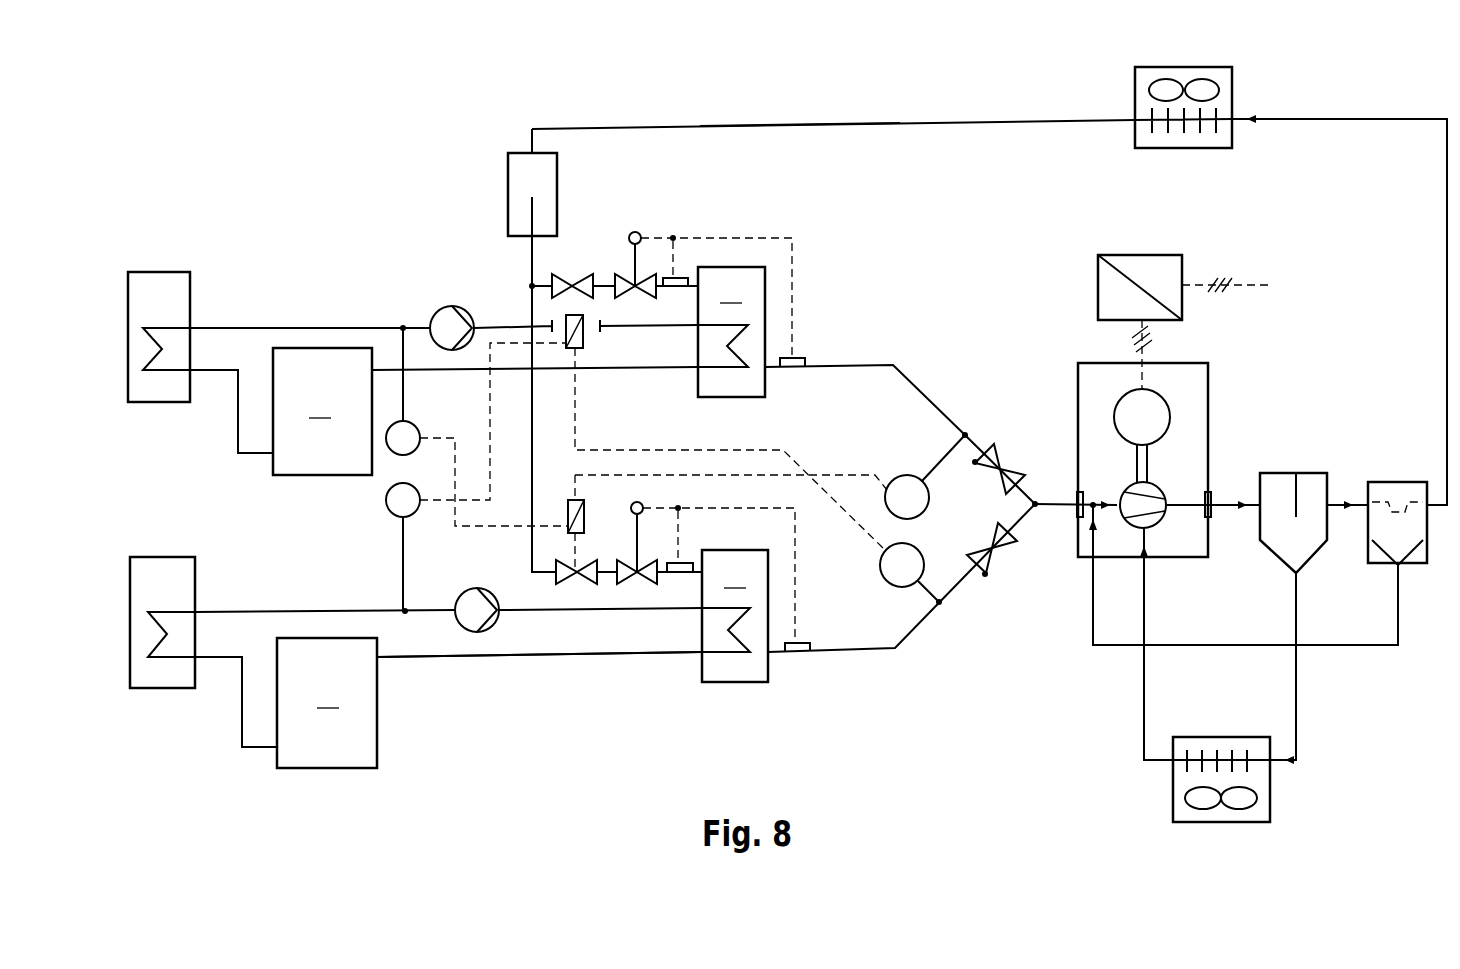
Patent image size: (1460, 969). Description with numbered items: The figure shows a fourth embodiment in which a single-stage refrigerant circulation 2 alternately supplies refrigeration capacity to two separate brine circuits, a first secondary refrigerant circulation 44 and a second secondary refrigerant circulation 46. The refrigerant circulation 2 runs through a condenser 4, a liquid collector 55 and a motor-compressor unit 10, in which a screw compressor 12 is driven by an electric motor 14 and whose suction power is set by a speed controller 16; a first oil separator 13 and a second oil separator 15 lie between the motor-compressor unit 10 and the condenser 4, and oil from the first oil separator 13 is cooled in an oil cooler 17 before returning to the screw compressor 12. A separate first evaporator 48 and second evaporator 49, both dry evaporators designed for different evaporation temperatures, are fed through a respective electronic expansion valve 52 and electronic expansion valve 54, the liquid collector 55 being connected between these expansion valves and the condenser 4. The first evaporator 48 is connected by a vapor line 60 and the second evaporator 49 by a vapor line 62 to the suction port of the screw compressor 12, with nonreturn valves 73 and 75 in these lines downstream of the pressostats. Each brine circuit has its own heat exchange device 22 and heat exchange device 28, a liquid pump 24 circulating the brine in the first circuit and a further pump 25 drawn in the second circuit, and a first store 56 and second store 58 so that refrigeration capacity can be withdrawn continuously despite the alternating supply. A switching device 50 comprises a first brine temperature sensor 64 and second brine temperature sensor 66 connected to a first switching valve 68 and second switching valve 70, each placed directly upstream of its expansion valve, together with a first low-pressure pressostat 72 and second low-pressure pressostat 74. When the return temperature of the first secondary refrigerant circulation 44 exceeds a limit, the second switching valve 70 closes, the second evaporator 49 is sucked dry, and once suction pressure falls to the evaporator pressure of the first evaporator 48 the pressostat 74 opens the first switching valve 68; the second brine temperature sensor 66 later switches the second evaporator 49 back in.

The refrigerant circulation 2 is at (810, 118).
The condenser 4 is at (1133, 97).
The motor-compressor unit 10 is at (1215, 372).
The screw compressor 12 is at (1160, 525).
The first oil separator 13 is at (1305, 473).
The electric motor 14 is at (1170, 416).
The second oil separator 15 is at (1393, 482).
The speed controller 16 is at (1098, 288).
The oil cooler 17 is at (1223, 823).
The heat exchange device 22 is at (162, 690).
The liquid pump 24 is at (490, 592).
The circulation pump 25 is at (452, 306).
The heat exchange device 28 is at (150, 272).
The first secondary refrigerant circulation 44 is at (528, 668).
The second secondary refrigerant circulation 46 is at (290, 315).
The first evaporator 48 is at (735, 616).
The second evaporator 49 is at (731, 332).
The switching device 50 is at (398, 467).
The electronic expansion valve 52 is at (630, 548).
The electronic expansion valve 54 is at (627, 265).
The liquid collector 55 is at (508, 182).
The first store 56 is at (327, 703).
The second store 58 is at (322, 411).
The vapor line 60 is at (915, 628).
The vapor line 62 is at (925, 392).
The first brine temperature sensor 64 is at (415, 512).
The second brine temperature sensor 66 is at (420, 432).
The first switching valve 68 is at (565, 512).
The second switching valve 70 is at (583, 335).
The first low-pressure pressostat 72 is at (882, 578).
The nonreturn valve 73 is at (1000, 555).
The second low-pressure pressostat 74 is at (905, 476).
The nonreturn valve 75 is at (997, 457).